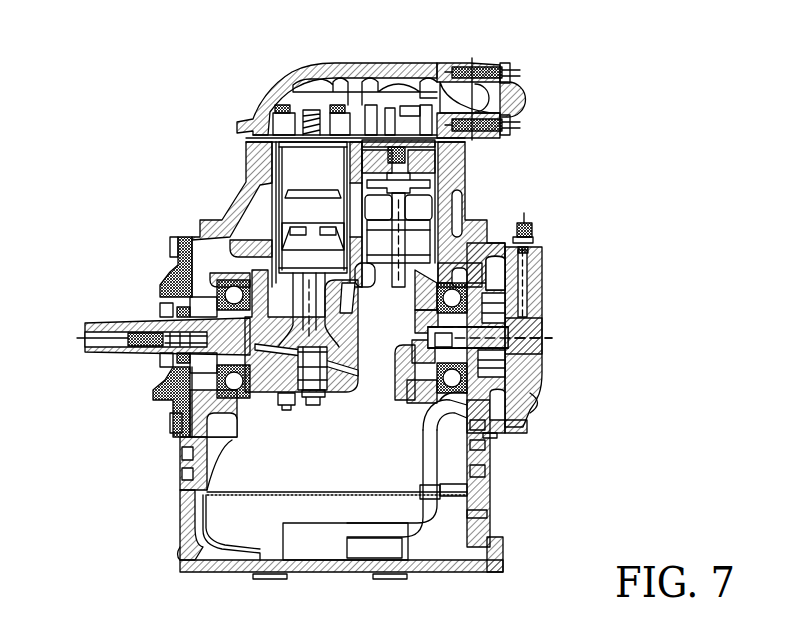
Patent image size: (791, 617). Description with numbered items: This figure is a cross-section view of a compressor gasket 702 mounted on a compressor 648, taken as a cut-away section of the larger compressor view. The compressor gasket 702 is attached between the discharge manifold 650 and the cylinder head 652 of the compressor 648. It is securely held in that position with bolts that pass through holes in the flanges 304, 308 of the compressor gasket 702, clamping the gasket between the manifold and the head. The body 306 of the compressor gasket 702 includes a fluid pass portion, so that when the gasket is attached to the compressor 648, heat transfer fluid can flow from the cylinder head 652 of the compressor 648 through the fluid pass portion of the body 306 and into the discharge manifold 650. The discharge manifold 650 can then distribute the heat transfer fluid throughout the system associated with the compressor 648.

The compressor 648 is at (88, 209).
The cylinder head 652 is at (420, 63).
The flange 304 is at (488, 62).
The body 306 is at (510, 72).
The discharge manifold 650 is at (510, 94).
The flange 308 is at (478, 140).
The compressor gasket 702 is at (472, 60).